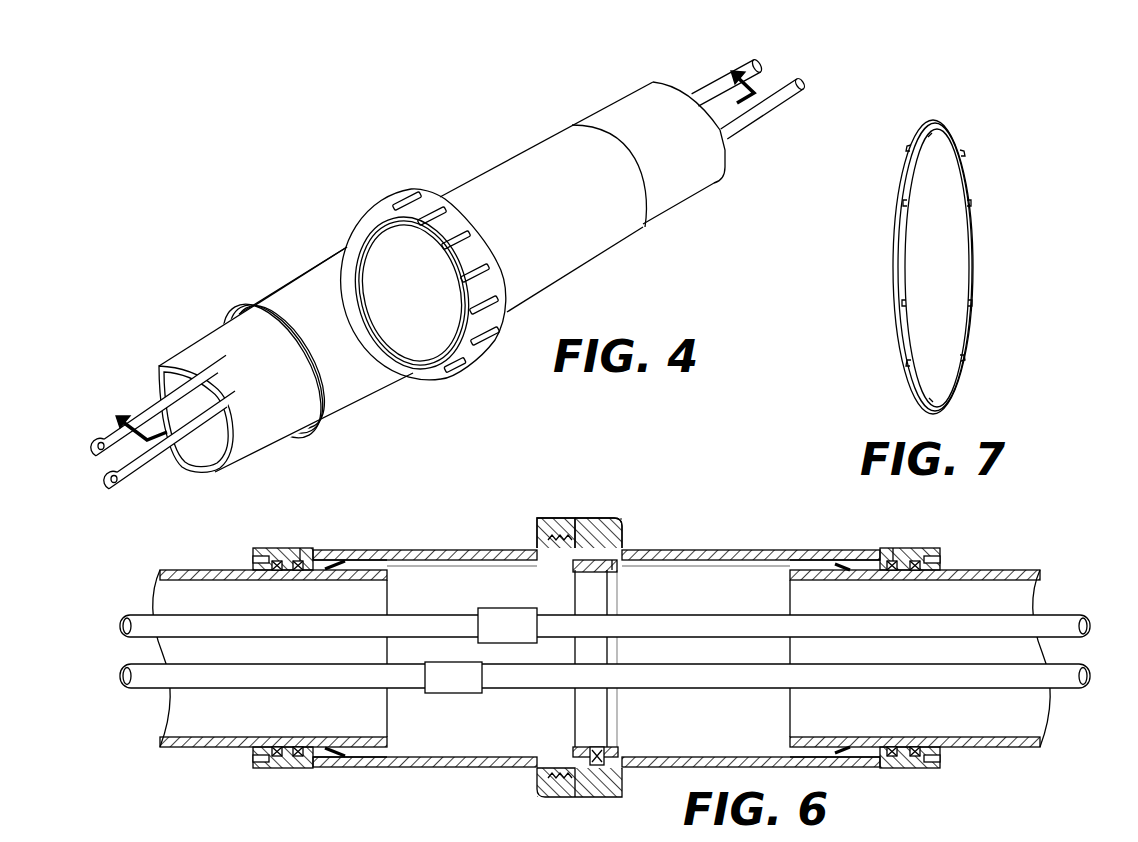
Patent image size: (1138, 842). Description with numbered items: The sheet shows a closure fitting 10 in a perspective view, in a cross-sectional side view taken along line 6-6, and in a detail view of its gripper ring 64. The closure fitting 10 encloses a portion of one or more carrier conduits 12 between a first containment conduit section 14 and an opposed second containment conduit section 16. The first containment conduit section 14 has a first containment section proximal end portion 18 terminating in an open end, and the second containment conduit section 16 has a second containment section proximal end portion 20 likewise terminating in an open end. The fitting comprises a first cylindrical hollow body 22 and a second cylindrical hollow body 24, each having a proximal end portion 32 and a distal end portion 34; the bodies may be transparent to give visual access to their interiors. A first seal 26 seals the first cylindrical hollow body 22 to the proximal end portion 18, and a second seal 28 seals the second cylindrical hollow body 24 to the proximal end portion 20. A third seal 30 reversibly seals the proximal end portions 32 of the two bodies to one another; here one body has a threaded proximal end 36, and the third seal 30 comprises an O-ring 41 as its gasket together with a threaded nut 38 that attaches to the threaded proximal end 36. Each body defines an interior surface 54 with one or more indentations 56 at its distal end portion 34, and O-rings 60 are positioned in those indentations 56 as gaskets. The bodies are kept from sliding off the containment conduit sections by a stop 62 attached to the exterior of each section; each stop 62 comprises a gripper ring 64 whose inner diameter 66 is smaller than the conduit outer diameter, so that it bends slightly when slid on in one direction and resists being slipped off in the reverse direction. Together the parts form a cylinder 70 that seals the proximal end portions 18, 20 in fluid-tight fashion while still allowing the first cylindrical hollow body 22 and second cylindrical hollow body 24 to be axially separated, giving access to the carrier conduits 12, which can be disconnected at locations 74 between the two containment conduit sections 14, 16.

In FIG. 4, the line 6- 6 is at (448, 268).
In FIG. 4, the closure fitting 10 is at (256, 176).
In FIG. 6, the closure fitting 10 is at (691, 431).
In FIG. 4, the carrier conduits 12 is at (106, 433).
In FIG. 6, the carrier conduits 12 is at (1064, 615).
In FIG. 4, the first containment conduit section 14 is at (202, 356).
In FIG. 6, the first containment conduit section 14 is at (212, 560).
In FIG. 4, the second containment conduit section 16 is at (700, 193).
In FIG. 6, the second containment conduit section 16 is at (1028, 563).
In FIG. 6, the first containment section proximal end portion 18 is at (370, 581).
In FIG. 6, the second containment section proximal end portion 20 is at (812, 580).
In FIG. 4, the first cylindrical hollow body 22 is at (295, 275).
In FIG. 6, the first cylindrical hollow body 22 is at (428, 545).
In FIG. 4, the second cylindrical hollow body 24 is at (472, 172).
In FIG. 6, the second cylindrical hollow body 24 is at (730, 545).
In FIG. 6, the first seal 26 is at (300, 550).
In FIG. 6, the second seal 28 is at (893, 556).
In FIG. 6, the third seal 30 is at (593, 540).
In FIG. 6, the proximal end portion 32 is at (550, 538).
In FIG. 4, the distal end portion 34 is at (273, 370).
In FIG. 6, the distal end portion 34 is at (268, 548).
In FIG. 6, the threaded proximal end 36 is at (563, 797).
In FIG. 4, the threaded nut 38 is at (391, 201).
In FIG. 6, the threaded nut 38 is at (590, 790).
In FIG. 6, the O-ring 41 is at (590, 748).
In FIG. 6, the interior surface 54 is at (462, 575).
In FIG. 6, the indentations 56 is at (301, 571).
In FIG. 6, the O-rings 60 is at (300, 746).
In FIG. 6, the stop 62 is at (345, 558).
In FIG. 7, the gripper ring 64 is at (978, 287).
In FIG. 6, the gripper ring 64 is at (332, 570).
In FIG. 7, the inner diameter 66 is at (958, 248).
In FIG. 6, the cylinder 70 is at (515, 544).
In FIG. 6, the locations 74 is at (518, 608).